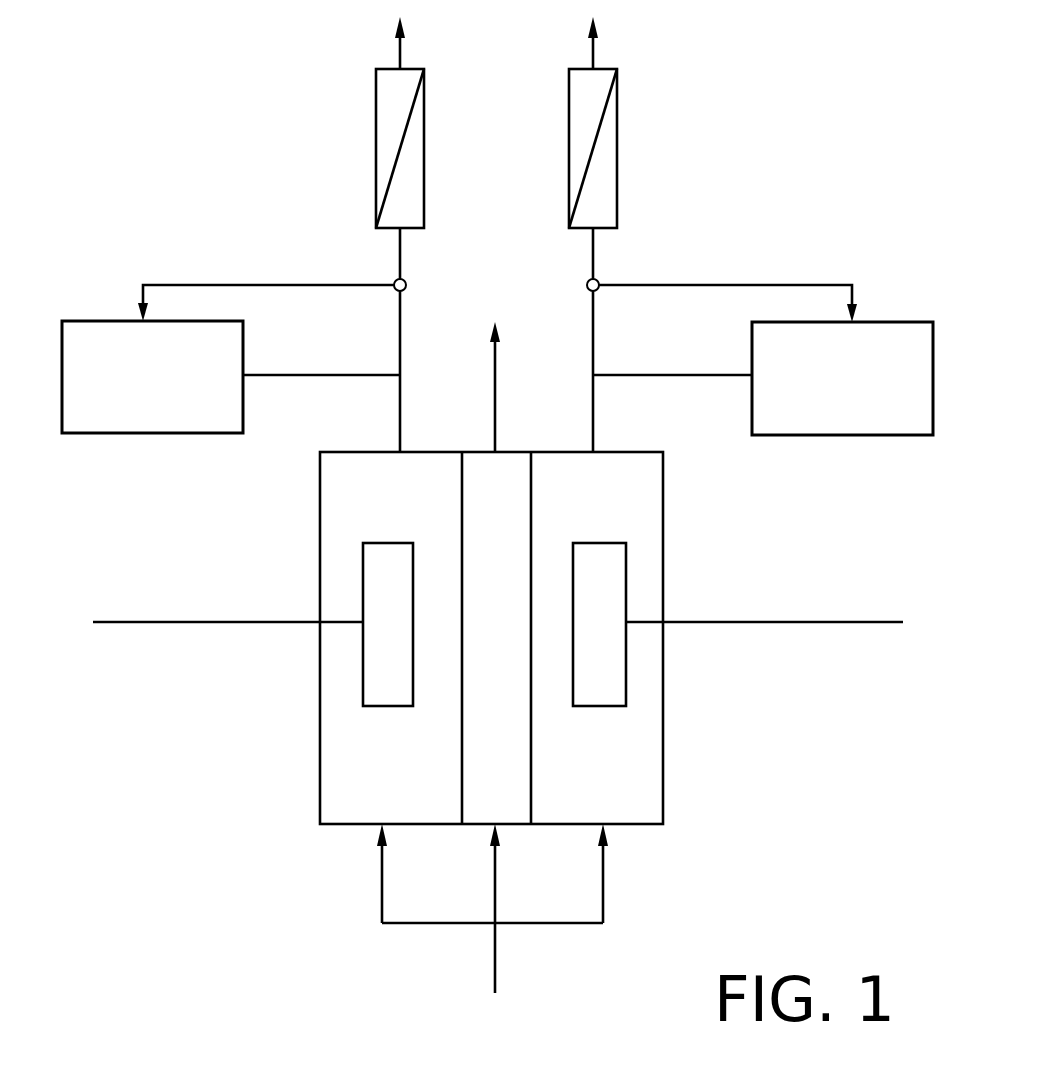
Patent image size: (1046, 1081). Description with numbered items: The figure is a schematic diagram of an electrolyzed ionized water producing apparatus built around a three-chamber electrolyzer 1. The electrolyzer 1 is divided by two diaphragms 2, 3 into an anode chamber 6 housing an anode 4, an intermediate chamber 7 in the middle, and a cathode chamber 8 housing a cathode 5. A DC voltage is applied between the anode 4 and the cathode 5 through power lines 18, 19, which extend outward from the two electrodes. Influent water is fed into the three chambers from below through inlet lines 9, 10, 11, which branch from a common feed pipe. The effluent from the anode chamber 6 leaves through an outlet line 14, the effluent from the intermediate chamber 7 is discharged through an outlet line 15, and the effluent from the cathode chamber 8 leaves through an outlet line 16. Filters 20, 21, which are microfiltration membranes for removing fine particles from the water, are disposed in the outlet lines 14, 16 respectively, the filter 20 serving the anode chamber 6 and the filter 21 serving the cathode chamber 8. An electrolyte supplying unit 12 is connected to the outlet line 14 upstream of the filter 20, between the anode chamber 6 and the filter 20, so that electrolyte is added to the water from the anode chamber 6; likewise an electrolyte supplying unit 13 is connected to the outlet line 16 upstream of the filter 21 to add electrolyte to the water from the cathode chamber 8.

The three-chamber electrolyzer 1 is at (300, 788).
The diaphragm 2 is at (532, 745).
The diaphragm 3 is at (460, 745).
The anode 4 is at (608, 543).
The cathode 5 is at (374, 543).
The anode chamber 6 is at (648, 745).
The intermediate chamber 7 is at (517, 770).
The cathode chamber 8 is at (338, 725).
The inlet line 9 is at (604, 880).
The inlet line 10 is at (495, 873).
The inlet line 11 is at (382, 877).
The electrolyte supplying unit 12 is at (902, 322).
The electrolyte supplying unit 13 is at (79, 320).
The outlet line 14 is at (594, 345).
The outlet line 15 is at (497, 395).
The outlet line 16 is at (400, 340).
The power line 18 is at (862, 622).
The power line 19 is at (137, 622).
The filter 20 is at (617, 112).
The filter 21 is at (376, 89).